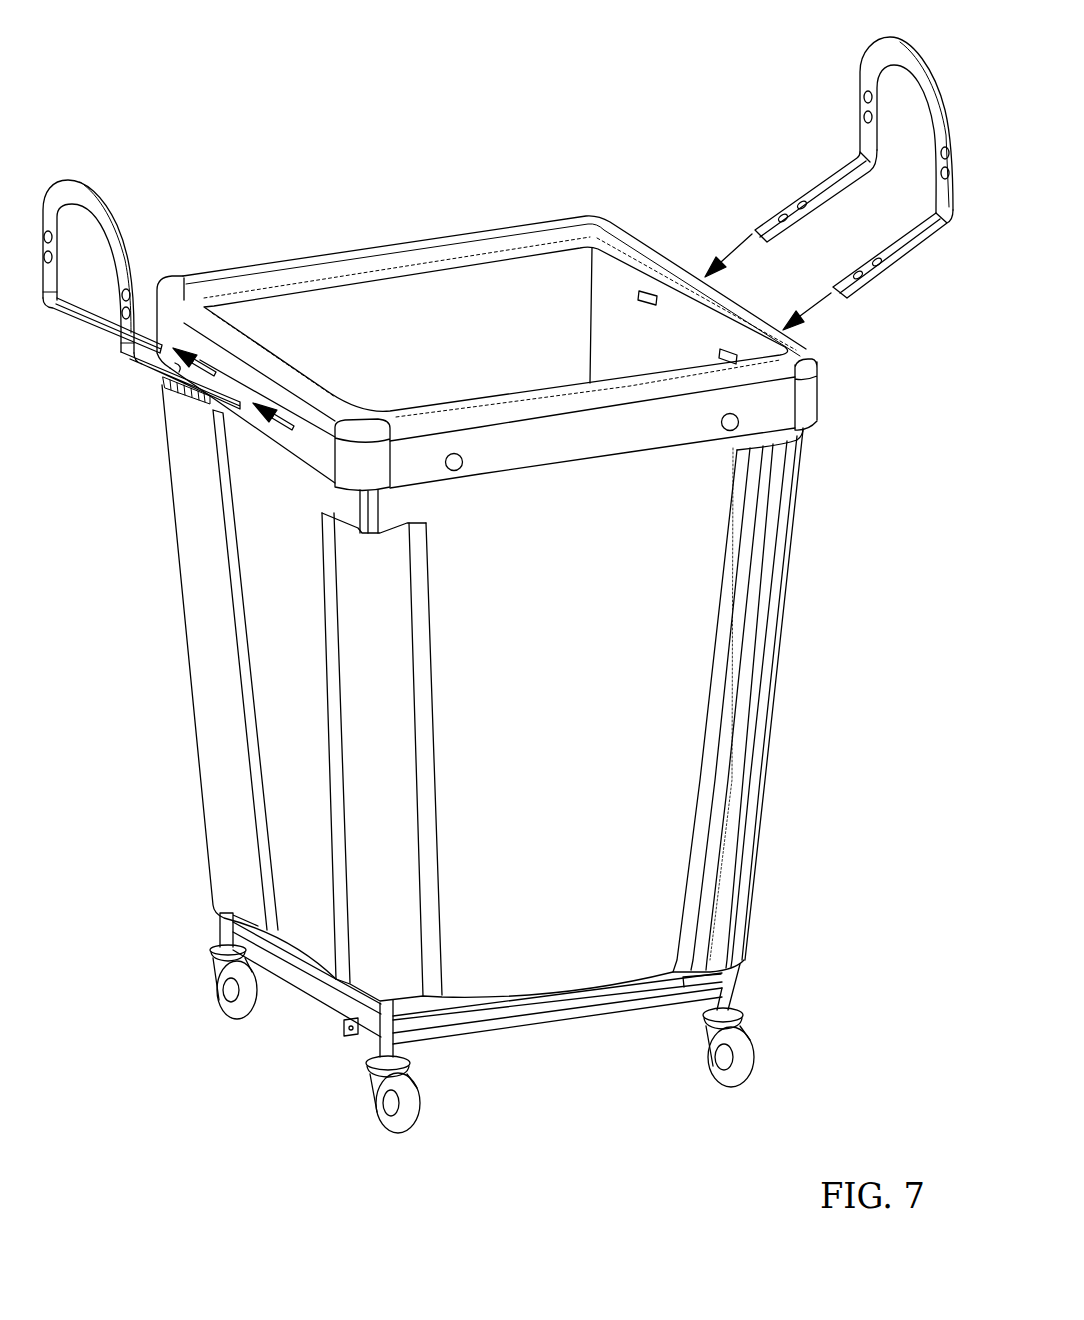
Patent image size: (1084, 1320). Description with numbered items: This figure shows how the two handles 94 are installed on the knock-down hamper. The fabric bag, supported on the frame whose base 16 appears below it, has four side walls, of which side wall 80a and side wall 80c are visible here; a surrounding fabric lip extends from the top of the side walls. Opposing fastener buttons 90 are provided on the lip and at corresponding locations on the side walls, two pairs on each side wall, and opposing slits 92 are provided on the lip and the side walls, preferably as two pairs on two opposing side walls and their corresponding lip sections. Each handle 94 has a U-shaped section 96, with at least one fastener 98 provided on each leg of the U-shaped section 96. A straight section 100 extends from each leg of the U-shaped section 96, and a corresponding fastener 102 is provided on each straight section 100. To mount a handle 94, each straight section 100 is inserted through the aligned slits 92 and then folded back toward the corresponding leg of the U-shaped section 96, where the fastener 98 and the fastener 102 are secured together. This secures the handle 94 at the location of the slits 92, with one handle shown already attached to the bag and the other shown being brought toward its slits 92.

The base 16 is at (582, 1046).
The side wall 80a is at (569, 709).
The side wall 80c is at (515, 357).
The fastener buttons 90 is at (460, 470).
The slits 92 is at (642, 302).
The handle 94 is at (116, 182).
The U-shaped section 96 is at (873, 53).
The fastener 98 is at (862, 98).
The straight section 100 is at (910, 240).
The fastener 102 is at (879, 268).